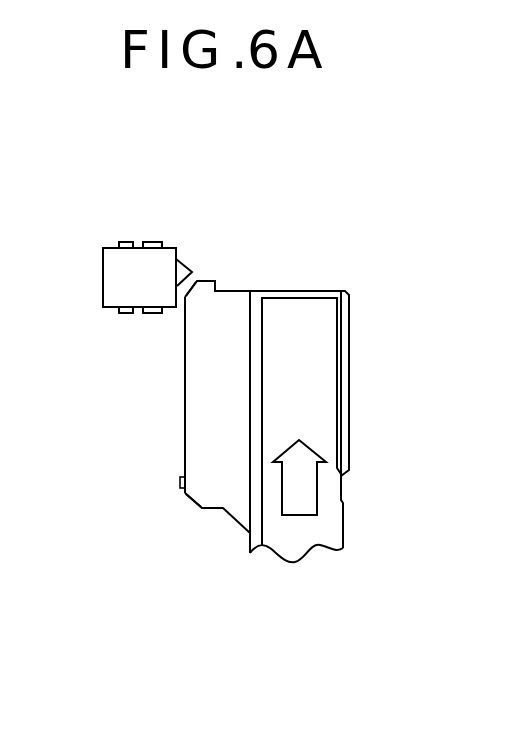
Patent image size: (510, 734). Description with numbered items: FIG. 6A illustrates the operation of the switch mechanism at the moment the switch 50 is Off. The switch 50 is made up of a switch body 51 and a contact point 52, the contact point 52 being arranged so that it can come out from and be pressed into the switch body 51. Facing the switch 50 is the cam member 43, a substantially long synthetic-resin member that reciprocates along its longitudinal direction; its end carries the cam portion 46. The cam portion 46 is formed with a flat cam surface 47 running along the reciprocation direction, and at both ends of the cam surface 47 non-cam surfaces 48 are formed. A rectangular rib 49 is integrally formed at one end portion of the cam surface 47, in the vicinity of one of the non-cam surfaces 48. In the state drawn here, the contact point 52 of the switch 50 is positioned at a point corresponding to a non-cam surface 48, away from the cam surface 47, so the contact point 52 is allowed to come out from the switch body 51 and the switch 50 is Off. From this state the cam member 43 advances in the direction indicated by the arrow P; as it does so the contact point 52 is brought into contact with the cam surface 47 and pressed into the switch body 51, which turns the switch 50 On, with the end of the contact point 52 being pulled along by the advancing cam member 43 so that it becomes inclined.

The cam member 43 is at (223, 381).
The cam portion 46 is at (207, 408).
The cam surface 47 is at (182, 366).
The non-cam surfaces 48 is at (211, 404).
The rib 49 is at (181, 482).
The switch 50 is at (142, 211).
The switch body 51 is at (115, 275).
The contact point 52 is at (198, 233).
The arrow P is at (300, 508).